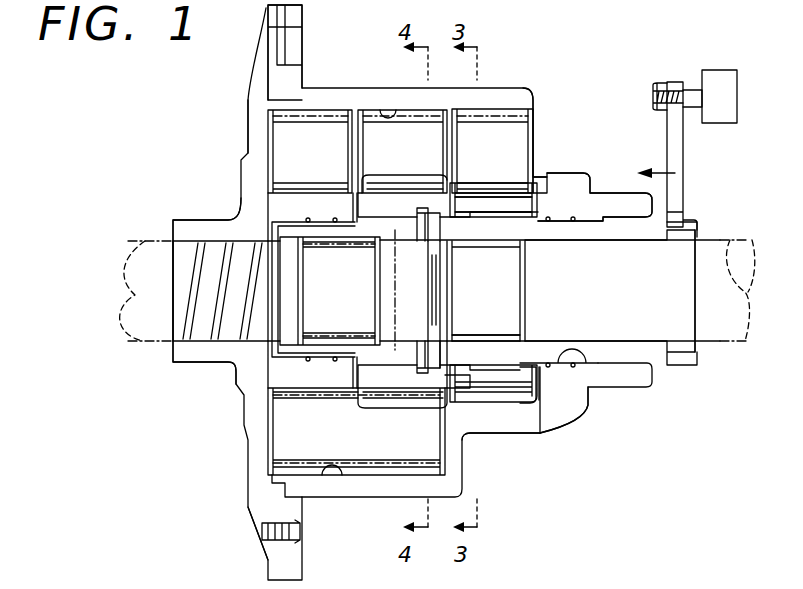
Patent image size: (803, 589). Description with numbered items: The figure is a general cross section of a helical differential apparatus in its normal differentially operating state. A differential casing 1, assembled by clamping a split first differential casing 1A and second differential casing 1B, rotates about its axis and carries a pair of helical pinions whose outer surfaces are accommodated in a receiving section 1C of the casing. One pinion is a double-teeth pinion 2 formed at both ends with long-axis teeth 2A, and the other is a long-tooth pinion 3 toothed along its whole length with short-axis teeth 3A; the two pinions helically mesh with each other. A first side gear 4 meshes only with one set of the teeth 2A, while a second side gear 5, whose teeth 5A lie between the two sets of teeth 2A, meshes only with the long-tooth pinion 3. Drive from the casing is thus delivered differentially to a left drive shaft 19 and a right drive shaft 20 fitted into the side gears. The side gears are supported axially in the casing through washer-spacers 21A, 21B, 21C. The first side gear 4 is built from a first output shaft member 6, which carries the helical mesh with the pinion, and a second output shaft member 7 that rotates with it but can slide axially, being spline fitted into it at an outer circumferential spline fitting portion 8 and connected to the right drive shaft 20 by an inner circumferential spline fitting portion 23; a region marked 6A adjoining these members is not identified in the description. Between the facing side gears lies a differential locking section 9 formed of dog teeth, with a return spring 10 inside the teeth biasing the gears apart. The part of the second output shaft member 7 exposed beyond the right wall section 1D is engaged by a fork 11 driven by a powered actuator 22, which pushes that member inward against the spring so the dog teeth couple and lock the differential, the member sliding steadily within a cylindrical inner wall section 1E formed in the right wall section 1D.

The differential casing 1 is at (356, 88).
The first differential casing 1A is at (250, 113).
The second differential casing 1B is at (313, 90).
The receiving section 1C is at (388, 118).
The right wall section 1D is at (523, 428).
The cylindrical inner wall section 1E is at (590, 392).
The double-teeth pinion 2 is at (500, 143).
The teeth 2A is at (322, 110).
The long-tooth pinion 3 is at (377, 447).
The teeth 3A is at (303, 400).
The first side gear 4 is at (543, 190).
The second side gear 5 is at (365, 245).
The teeth 5A is at (420, 213).
The first output shaft member 6 is at (487, 207).
The bearing seat wall 6A is at (525, 395).
The second output shaft member 7 is at (522, 226).
The spline fitting portion 8 is at (490, 200).
The differential locking section 9 is at (416, 212).
The return spring 10 is at (470, 362).
The fork 11 is at (683, 154).
The left drive shaft 19 is at (140, 236).
The right drive shaft 20 is at (712, 238).
The washer-spacer 21A is at (352, 201).
The washer-spacer 21B is at (455, 205).
The washer-spacer 21C is at (550, 200).
The powered actuator 22 is at (718, 75).
The spline fitting portion 23 is at (510, 340).